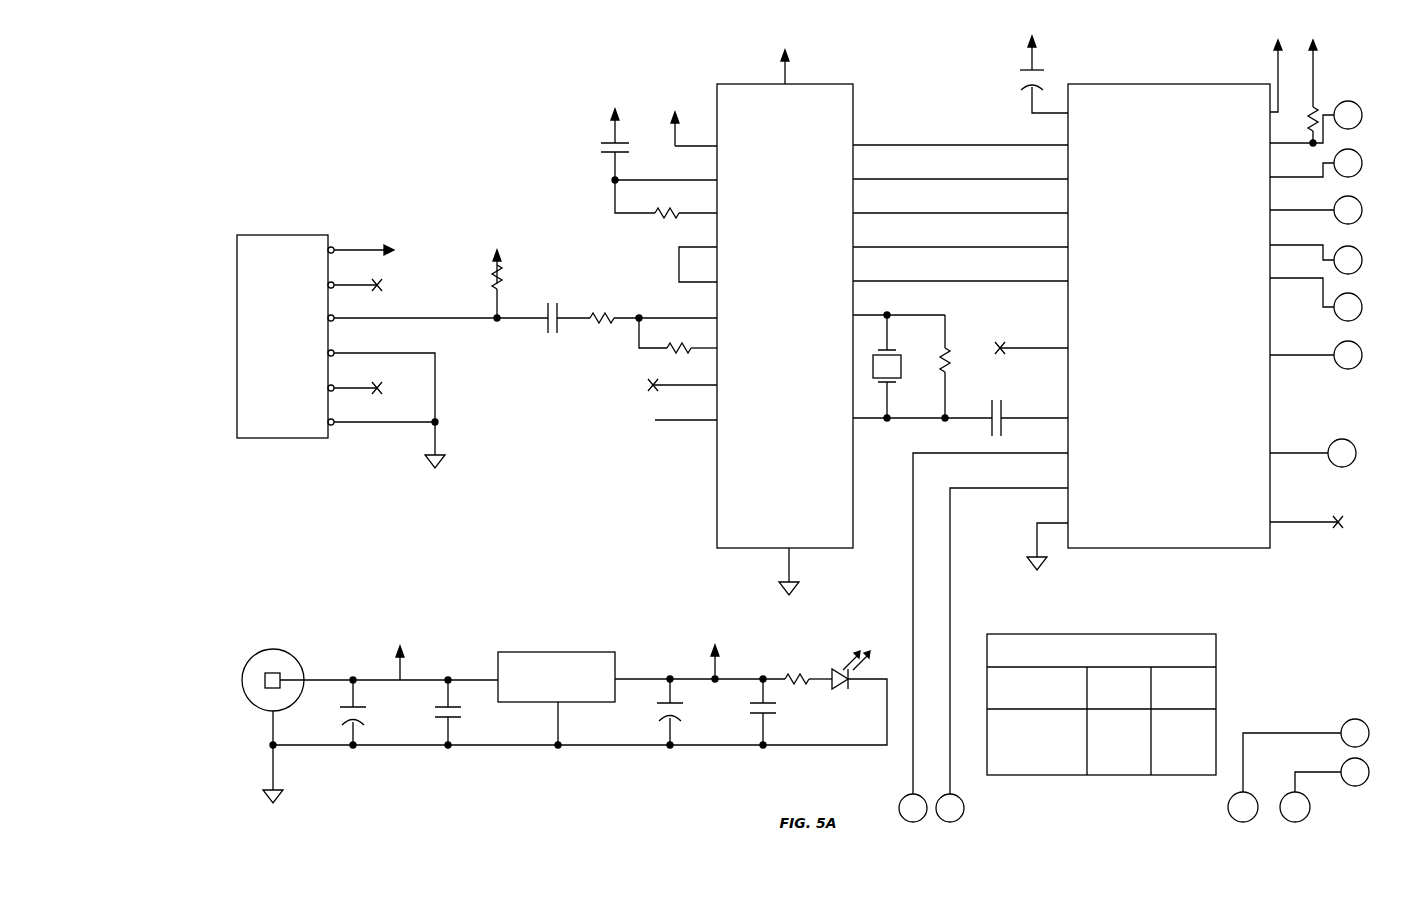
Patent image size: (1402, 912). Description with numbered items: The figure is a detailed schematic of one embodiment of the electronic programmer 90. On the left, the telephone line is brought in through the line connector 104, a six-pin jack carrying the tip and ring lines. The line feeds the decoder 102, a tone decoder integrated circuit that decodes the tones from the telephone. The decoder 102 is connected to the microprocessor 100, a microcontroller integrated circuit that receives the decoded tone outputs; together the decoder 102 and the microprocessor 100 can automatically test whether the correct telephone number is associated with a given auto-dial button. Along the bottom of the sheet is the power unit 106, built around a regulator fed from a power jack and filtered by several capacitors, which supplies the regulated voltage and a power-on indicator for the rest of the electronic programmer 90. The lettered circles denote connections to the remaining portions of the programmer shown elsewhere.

The electronic programmer 90 is at (224, 86).
The microprocessor 100 is at (1108, 80).
The decoder 102 is at (732, 82).
The line connector 104 is at (266, 190).
The power unit 106 is at (610, 596).